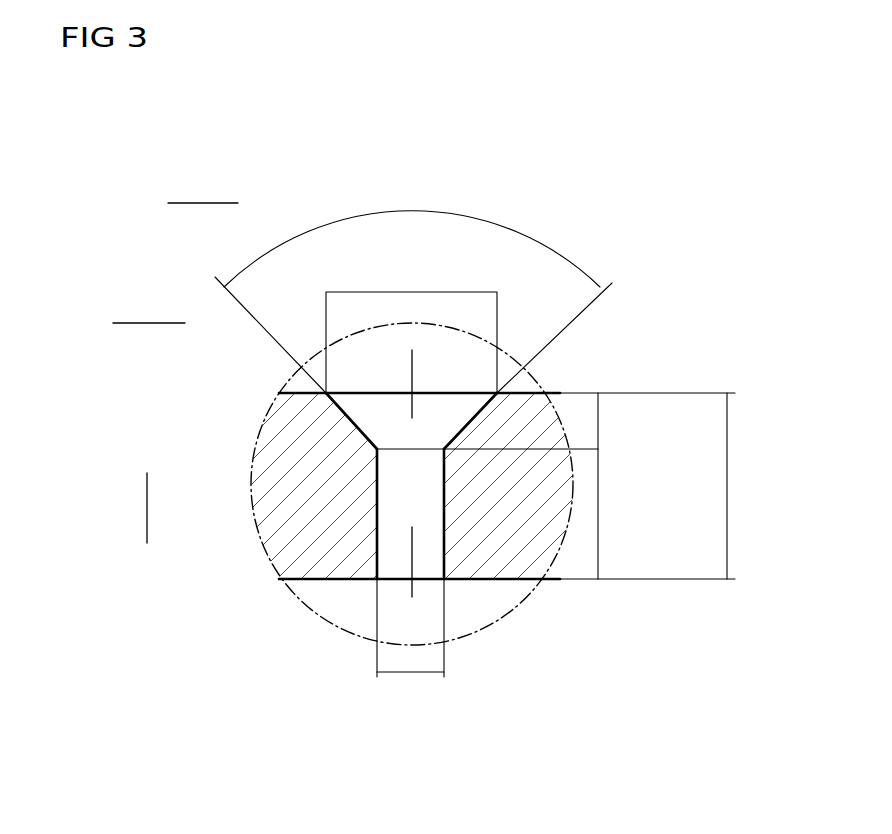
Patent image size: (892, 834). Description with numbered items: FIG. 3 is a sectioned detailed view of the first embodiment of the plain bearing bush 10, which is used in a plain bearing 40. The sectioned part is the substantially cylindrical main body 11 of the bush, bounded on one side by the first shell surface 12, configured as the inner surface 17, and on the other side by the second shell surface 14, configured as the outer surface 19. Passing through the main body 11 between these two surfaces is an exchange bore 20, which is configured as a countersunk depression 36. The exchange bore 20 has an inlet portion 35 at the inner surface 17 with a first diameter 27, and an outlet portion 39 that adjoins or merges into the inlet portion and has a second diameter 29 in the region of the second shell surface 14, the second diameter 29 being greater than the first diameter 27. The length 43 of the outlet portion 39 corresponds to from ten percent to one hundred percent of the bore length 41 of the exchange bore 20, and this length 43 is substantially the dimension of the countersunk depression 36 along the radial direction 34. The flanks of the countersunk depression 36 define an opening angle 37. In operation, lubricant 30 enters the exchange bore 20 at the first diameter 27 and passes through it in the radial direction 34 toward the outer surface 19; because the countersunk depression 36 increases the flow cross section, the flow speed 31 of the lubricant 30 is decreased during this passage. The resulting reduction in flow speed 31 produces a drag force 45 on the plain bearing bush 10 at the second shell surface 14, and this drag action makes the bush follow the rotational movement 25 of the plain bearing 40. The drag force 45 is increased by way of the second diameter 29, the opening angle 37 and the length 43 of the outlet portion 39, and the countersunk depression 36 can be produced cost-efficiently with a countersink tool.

The plain bearing bush 10 is at (468, 406).
The plain bearing 40 is at (468, 406).
The main body 11 is at (530, 550).
The first shell surface 12 is at (491, 626).
The inner surface 17 is at (312, 597).
The second shell surface 14 is at (451, 377).
The outer surface 19 is at (305, 388).
The exchange bore 20 is at (378, 512).
The rotational movement 25 is at (195, 203).
The first diameter 27 is at (408, 677).
The second diameter 29 is at (418, 292).
The lubricant 30 is at (532, 503).
The flow speed 31 is at (412, 380).
The radial direction 34 is at (148, 512).
The inlet portion 35 is at (600, 510).
The countersunk depression 36 is at (357, 432).
The opening angle 37 is at (390, 210).
The outlet portion 39 is at (540, 421).
The length of the outlet portion 43 is at (600, 422).
The bore length 41 is at (730, 485).
The drag force 45 is at (143, 323).